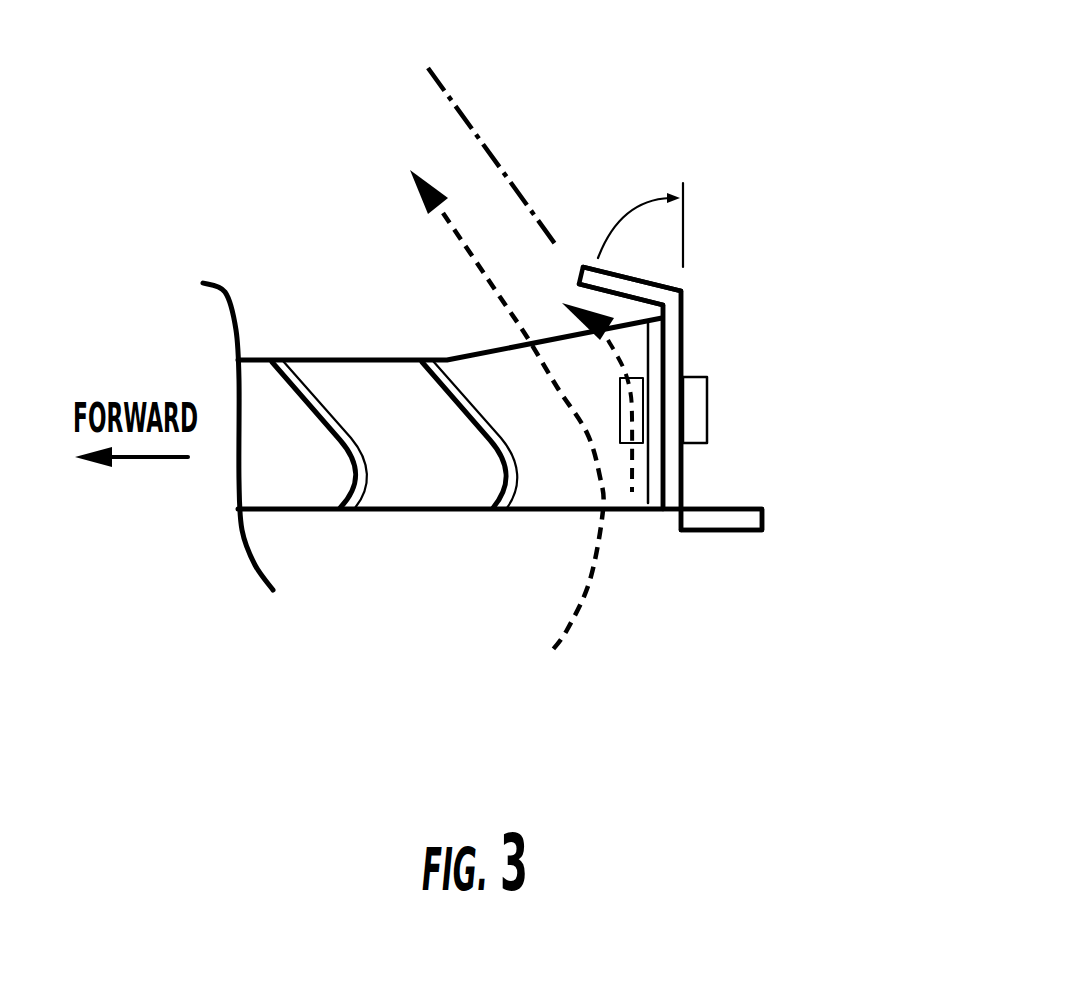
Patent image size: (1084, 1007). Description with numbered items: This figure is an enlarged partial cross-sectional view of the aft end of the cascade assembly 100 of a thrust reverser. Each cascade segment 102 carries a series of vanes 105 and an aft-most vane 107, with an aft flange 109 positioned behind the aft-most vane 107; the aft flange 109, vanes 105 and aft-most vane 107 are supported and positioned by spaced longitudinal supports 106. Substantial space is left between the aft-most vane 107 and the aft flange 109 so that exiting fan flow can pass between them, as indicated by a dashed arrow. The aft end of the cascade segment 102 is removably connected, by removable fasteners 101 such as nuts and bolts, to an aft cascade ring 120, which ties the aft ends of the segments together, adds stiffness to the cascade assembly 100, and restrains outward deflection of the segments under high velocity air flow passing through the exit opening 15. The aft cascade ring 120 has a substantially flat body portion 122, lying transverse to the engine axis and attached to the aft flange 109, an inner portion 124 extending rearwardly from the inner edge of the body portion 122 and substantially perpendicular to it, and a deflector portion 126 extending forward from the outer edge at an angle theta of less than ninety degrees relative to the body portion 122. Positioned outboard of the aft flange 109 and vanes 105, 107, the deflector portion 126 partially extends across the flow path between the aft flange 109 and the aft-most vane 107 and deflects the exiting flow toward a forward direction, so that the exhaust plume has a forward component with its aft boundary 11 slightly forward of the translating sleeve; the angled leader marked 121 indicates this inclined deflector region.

The aft boundary 11 is at (450, 93).
The exit opening 15 is at (368, 267).
The cascade assembly 100 is at (210, 168).
The removable fasteners 101 is at (697, 408).
The cascade segment 102 is at (283, 512).
The vanes 105 is at (316, 405).
The longitudinal supports 106 is at (408, 488).
The aft-most vane 107 is at (493, 450).
The aft flange 109 is at (643, 495).
The aft cascade ring 120 is at (683, 315).
The angled flange 121 is at (588, 258).
The body portion 122 is at (673, 352).
The inner portion 124 is at (695, 532).
The deflector portion 126 is at (634, 272).